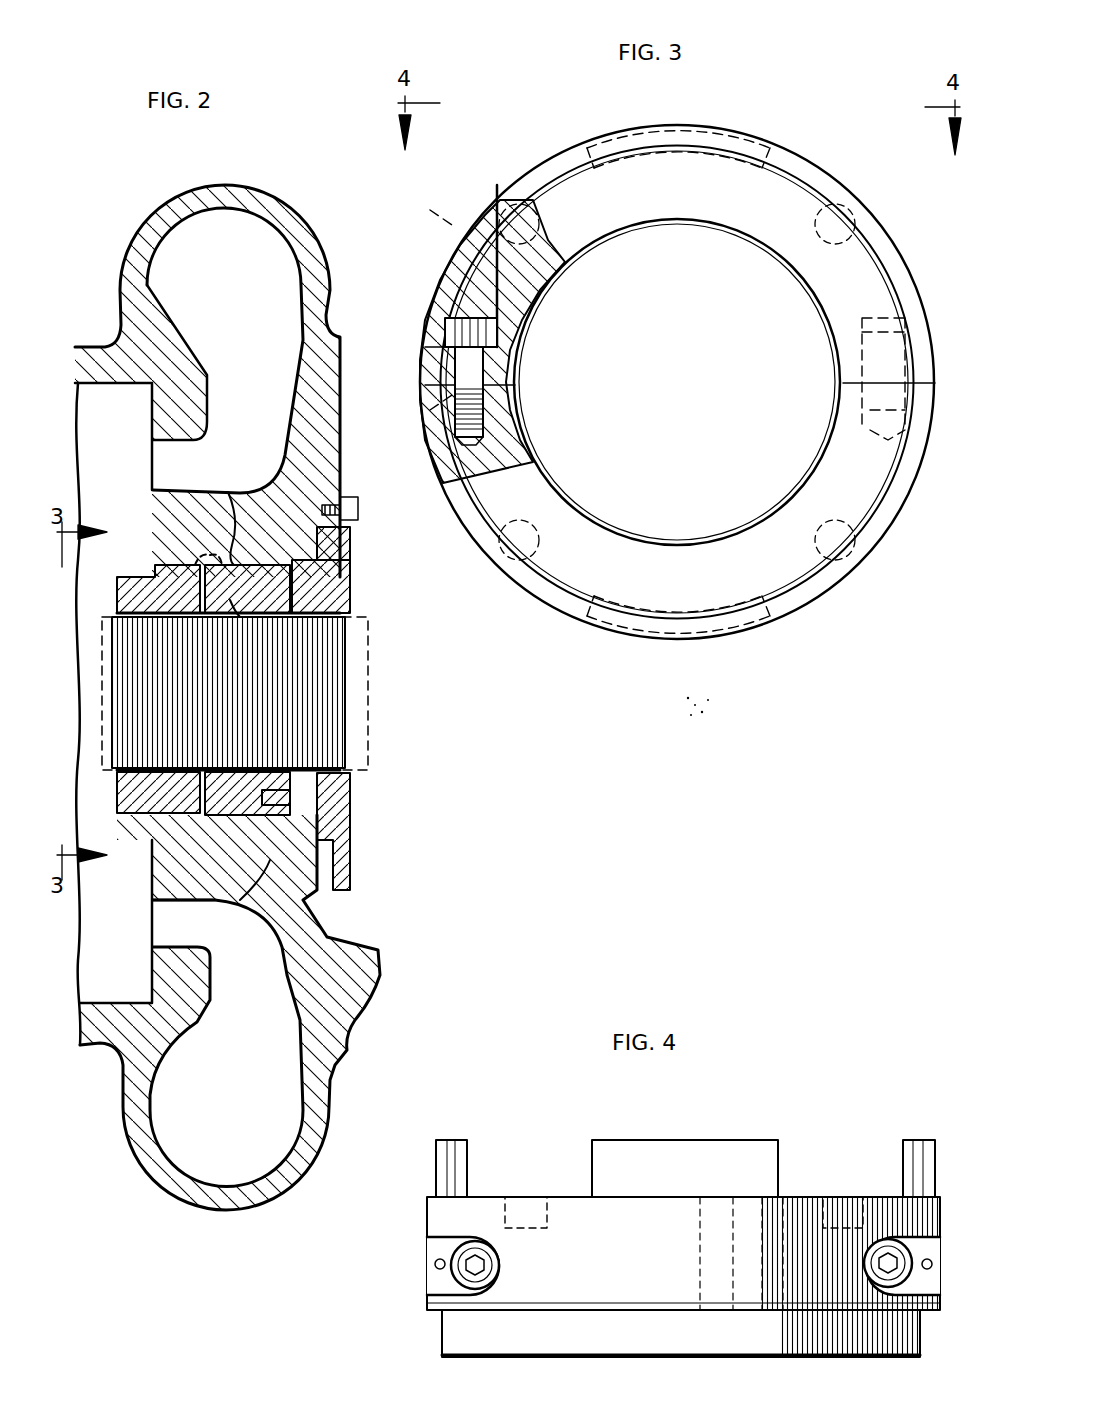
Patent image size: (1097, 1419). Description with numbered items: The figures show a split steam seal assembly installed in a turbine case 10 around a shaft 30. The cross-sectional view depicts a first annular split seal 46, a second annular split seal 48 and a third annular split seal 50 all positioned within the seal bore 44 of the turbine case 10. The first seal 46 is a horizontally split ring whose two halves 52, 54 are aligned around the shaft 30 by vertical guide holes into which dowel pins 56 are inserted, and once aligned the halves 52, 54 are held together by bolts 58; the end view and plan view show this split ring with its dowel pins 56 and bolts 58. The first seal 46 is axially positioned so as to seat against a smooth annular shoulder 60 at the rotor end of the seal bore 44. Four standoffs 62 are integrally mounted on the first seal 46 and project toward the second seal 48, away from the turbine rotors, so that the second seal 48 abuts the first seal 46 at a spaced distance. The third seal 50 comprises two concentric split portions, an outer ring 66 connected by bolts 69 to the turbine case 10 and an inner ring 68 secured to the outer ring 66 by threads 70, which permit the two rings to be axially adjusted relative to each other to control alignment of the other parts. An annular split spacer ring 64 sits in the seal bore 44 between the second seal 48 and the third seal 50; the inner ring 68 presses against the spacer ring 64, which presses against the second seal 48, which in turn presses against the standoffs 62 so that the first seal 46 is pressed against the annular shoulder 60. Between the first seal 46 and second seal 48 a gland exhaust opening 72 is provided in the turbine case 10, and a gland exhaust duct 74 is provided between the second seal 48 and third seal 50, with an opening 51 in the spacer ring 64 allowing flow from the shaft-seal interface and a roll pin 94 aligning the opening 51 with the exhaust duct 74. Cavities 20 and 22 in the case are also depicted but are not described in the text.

In FIG. 2, the turbine case 10 is at (112, 330).
In FIG. 2, the upper coolant passage 20 is at (255, 218).
In FIG. 2, the lower coolant passage 22 is at (328, 1052).
In FIG. 2, the shaft 30 is at (350, 705).
In FIG. 2, the seal bore 44 is at (102, 714).
In FIG. 2, the first annular split seal 46 is at (140, 603).
In FIG. 3, the first annular split seal 46 is at (605, 285).
In FIG. 4, the first annular split seal 46 is at (378, 1288).
In FIG. 2, the second annular split seal 48 is at (232, 600).
In FIG. 2, the third annular split seal 50 is at (338, 617).
In FIG. 2, the opening 51 is at (345, 840).
In FIG. 3, the half of the first seal 52 is at (722, 205).
In FIG. 4, the half of the first seal 52 is at (452, 1335).
In FIG. 3, the half of the first seal 54 is at (668, 555).
In FIG. 3, the dowel pins 56 is at (435, 362).
In FIG. 4, the dowel pins 56 is at (435, 1262).
In FIG. 3, the bolts 58 is at (462, 316).
In FIG. 4, the bolts 58 is at (468, 1272).
In FIG. 2, the annular shoulder 60 is at (140, 838).
In FIG. 2, the standoffs 62 is at (212, 550).
In FIG. 3, the standoffs 62 is at (752, 146).
In FIG. 4, the standoffs 62 is at (455, 1150).
In FIG. 2, the annular split spacer ring 64 is at (300, 810).
In FIG. 2, the outer ring 66 is at (355, 540).
In FIG. 2, the inner ring 68 is at (350, 780).
In FIG. 2, the bolts 69 is at (348, 497).
In FIG. 2, the threads 70 is at (352, 570).
In FIG. 2, the gland exhaust opening 72 is at (212, 882).
In FIG. 2, the gland exhaust duct 74 is at (270, 880).
In FIG. 2, the roll pin 94 is at (232, 490).